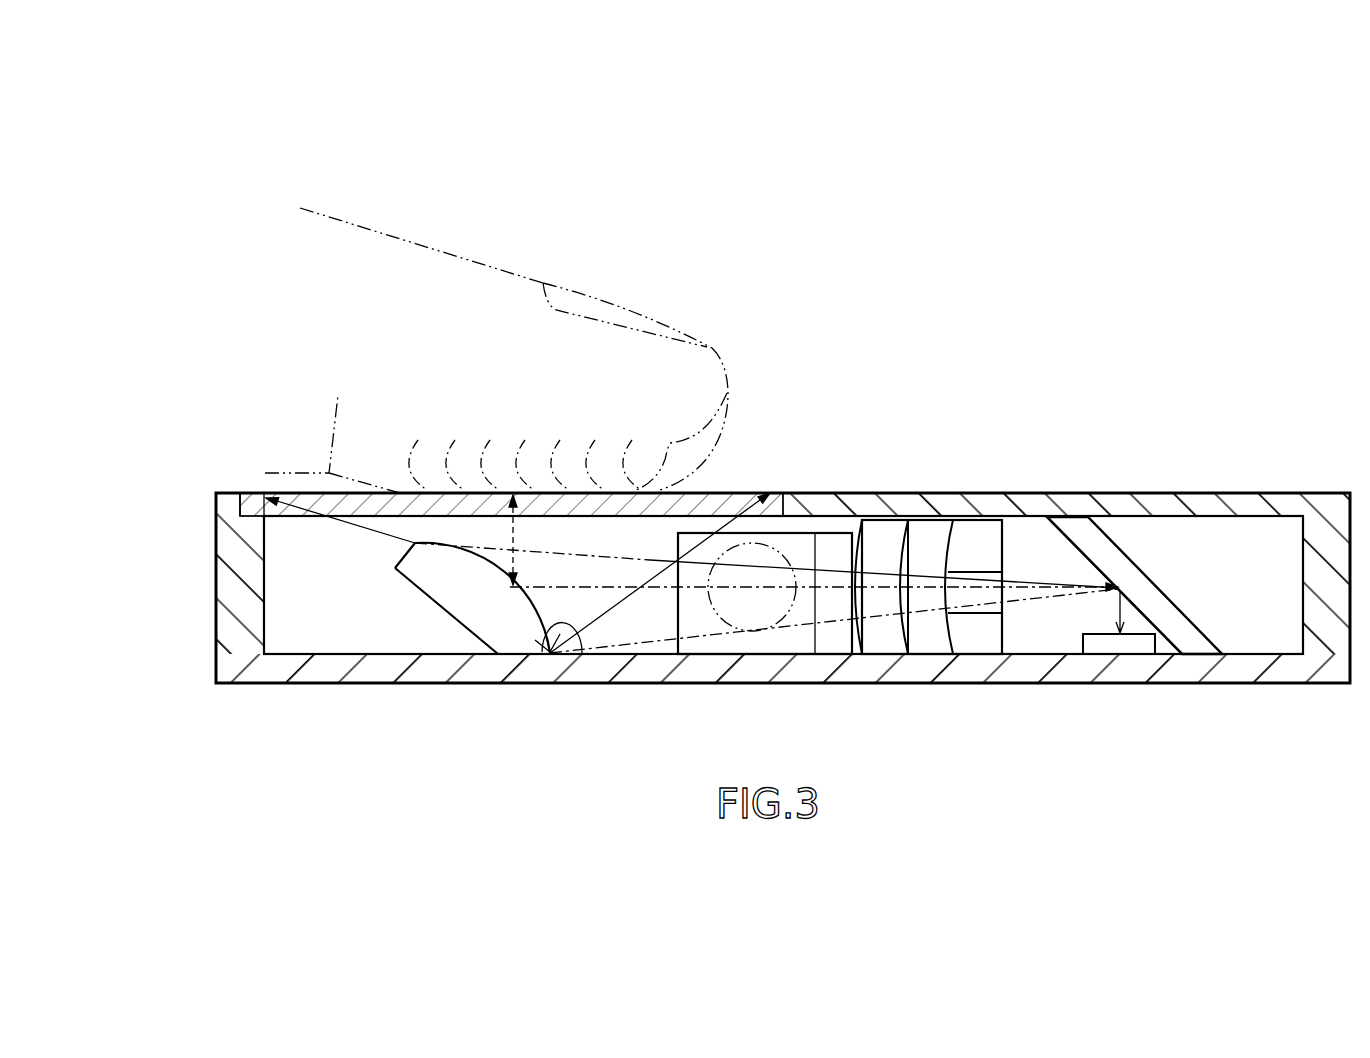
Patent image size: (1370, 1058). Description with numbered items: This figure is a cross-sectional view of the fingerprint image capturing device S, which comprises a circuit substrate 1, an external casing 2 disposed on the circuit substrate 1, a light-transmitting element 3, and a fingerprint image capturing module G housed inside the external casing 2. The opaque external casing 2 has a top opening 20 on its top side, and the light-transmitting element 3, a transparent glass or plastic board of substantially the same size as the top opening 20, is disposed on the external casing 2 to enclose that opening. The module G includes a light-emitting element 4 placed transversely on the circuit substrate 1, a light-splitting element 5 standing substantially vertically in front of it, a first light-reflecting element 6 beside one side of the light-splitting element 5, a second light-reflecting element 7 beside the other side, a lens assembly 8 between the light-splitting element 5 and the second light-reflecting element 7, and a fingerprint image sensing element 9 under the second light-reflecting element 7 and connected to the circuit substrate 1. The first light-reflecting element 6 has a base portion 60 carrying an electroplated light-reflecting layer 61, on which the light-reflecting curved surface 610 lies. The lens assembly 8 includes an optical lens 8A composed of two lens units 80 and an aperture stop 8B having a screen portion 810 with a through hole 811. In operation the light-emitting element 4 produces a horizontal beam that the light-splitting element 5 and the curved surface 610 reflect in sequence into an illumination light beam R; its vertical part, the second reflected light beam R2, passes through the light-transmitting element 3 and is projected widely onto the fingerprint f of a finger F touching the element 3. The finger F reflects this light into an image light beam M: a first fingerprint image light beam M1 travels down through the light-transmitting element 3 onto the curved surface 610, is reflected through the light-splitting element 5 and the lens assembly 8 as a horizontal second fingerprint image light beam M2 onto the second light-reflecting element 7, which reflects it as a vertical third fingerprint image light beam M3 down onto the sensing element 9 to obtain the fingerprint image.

The circuit substrate 1 is at (279, 690).
The external casing 2 is at (205, 570).
The top opening 20 is at (245, 490).
The light-transmitting element 3 is at (727, 482).
The light-emitting element 4 is at (778, 537).
The light-splitting element 5 is at (730, 659).
The first light-reflecting element 6 is at (506, 656).
The base portion 60 is at (478, 624).
The electroplated light-reflecting layer 61 is at (518, 620).
The light-reflecting curved surface 610 is at (578, 660).
The second light-reflecting element 7 is at (1142, 556).
The lens assembly 8 is at (943, 550).
The optical lens 8A is at (910, 518).
The aperture stop 8B is at (959, 575).
The lens unit 80 is at (965, 435).
The screen portion 810 is at (964, 633).
The through hole 811 is at (988, 608).
The fingerprint image sensing element 9 is at (1141, 655).
The fingerprint image capturing module G is at (401, 638).
The finger F is at (441, 242).
The fingerprint f is at (733, 389).
The illumination light beam R is at (329, 429).
The second reflected light beam R2 is at (318, 512).
The image light beam M is at (756, 450).
The first fingerprint image light beam M1 is at (384, 536).
The second fingerprint image light beam M2 is at (1062, 598).
The third fingerprint image light beam M3 is at (1145, 613).
The fingerprint image capturing device S is at (746, 455).